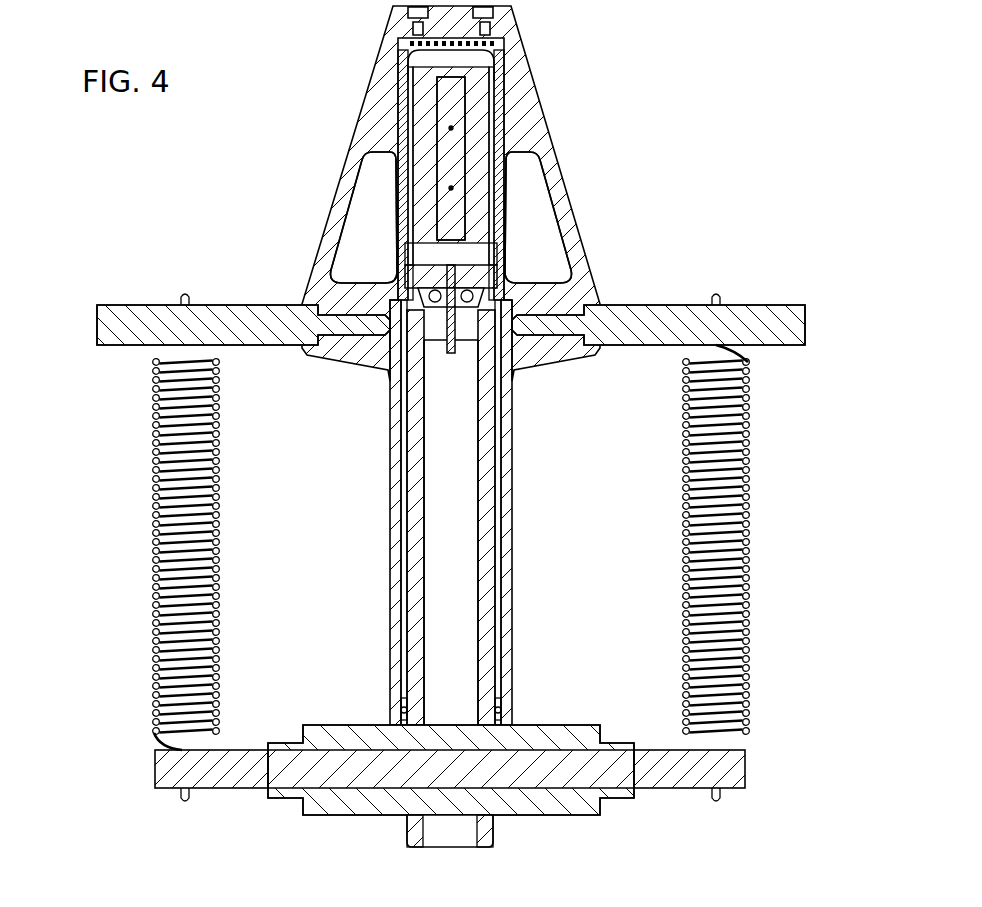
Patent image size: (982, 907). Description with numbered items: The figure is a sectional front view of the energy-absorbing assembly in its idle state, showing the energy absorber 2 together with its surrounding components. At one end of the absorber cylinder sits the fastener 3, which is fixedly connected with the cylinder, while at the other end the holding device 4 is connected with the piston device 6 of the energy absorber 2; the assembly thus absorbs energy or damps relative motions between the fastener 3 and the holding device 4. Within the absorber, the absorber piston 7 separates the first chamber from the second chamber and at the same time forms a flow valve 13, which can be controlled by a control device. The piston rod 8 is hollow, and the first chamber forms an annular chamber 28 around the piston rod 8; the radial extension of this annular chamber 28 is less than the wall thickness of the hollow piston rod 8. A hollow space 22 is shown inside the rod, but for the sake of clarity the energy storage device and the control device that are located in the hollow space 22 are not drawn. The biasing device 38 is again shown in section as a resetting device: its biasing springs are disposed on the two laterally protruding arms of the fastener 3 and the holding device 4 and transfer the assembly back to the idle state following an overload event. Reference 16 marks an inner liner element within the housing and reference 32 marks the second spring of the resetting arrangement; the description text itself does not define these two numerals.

The energy absorber 2 is at (640, 100).
The fastener 3 is at (368, 72).
The holding device 4 is at (643, 793).
The piston device 6 is at (485, 95).
The absorber piston 7 is at (490, 122).
The piston rod 8 is at (495, 443).
The flow valve 13 is at (358, 246).
The liner 16 is at (417, 120).
The hollow space 22 is at (455, 612).
The annular chamber 28 is at (498, 528).
The spring 32 is at (148, 520).
The biasing device 38 is at (752, 522).